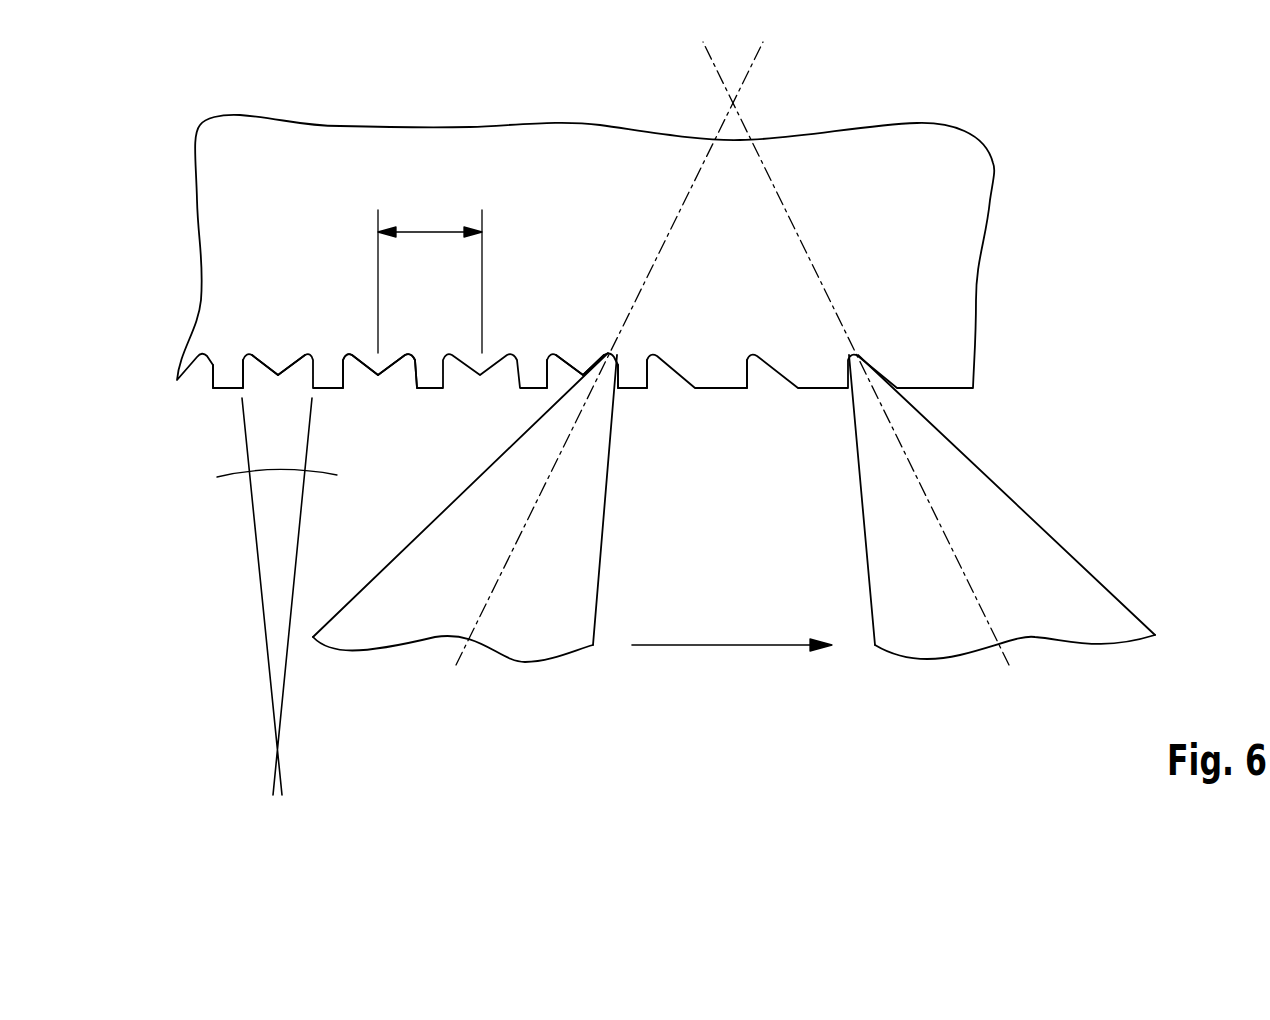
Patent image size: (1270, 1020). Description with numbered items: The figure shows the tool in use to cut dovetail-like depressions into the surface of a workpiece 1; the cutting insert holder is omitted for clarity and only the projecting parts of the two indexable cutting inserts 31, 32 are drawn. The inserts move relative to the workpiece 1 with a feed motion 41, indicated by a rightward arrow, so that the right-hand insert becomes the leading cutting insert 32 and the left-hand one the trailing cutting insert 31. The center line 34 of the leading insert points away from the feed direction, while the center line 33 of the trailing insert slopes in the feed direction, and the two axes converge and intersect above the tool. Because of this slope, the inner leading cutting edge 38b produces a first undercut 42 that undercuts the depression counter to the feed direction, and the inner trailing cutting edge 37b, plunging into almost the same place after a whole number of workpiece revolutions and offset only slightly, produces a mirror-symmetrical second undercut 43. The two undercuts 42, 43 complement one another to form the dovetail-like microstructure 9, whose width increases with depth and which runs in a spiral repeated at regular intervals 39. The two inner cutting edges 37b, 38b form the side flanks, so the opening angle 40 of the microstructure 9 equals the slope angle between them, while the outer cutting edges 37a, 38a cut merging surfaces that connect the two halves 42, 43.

The workpiece 1 is at (963, 250).
The microstructure 9 is at (415, 392).
The trailing cutting insert 31 is at (588, 670).
The leading cutting insert 32 is at (1160, 670).
The center line of the trailing cutting insert 33 is at (570, 433).
The center line of the leading cutting insert 34 is at (893, 436).
The outer cutting edge of the trailing cutting insert 37a is at (478, 478).
The inner trailing cutting edge 37b is at (606, 505).
The outer cutting edge of the leading cutting insert 38a is at (990, 478).
The inner leading cutting edge 38b is at (860, 505).
The regular interval 39 is at (428, 232).
The opening angle of the microstructure 40 is at (232, 467).
The feed motion 41 is at (735, 652).
The first undercut 42 is at (243, 353).
The second undercut 43 is at (312, 353).